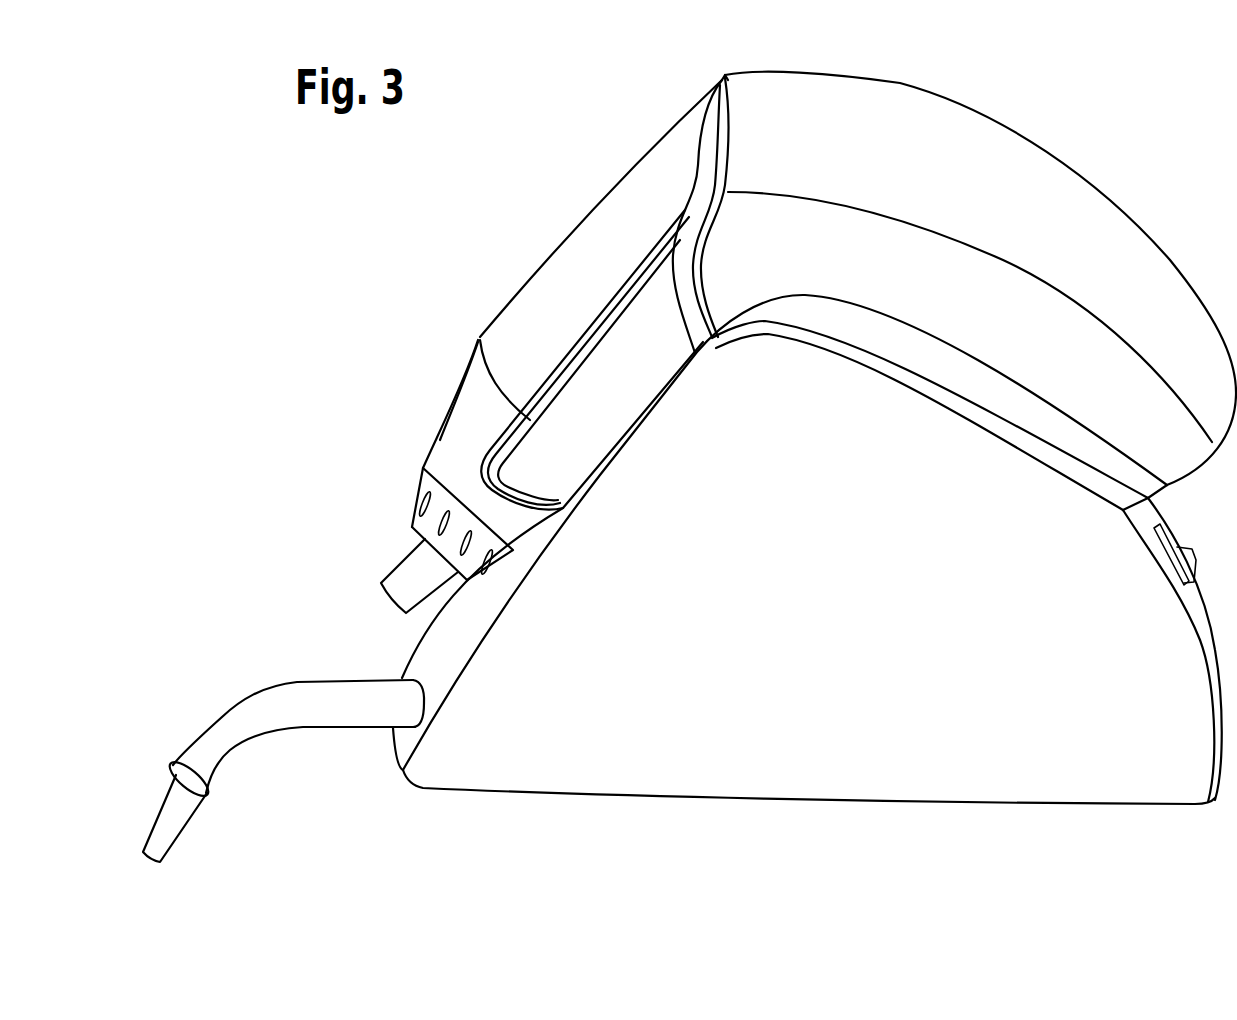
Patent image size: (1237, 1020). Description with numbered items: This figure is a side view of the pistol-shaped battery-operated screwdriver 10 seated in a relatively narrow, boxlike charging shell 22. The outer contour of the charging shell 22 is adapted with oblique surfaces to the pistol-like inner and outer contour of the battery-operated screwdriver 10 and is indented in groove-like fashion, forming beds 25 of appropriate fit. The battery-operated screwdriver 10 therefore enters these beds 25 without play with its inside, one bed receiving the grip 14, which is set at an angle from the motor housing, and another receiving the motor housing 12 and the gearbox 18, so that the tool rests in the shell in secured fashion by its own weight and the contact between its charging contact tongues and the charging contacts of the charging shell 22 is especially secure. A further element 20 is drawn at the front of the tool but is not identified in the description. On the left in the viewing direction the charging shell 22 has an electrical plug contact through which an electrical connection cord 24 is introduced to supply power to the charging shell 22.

The battery-operated screwdriver 10 is at (877, 64).
The motor housing 12 is at (640, 193).
The grip 14 is at (1008, 172).
The gearbox 18 is at (473, 426).
The nozzle 20 is at (410, 577).
The charging shell 22 is at (843, 762).
The electrical connection cord 24 is at (307, 703).
The beds 25 is at (958, 390).